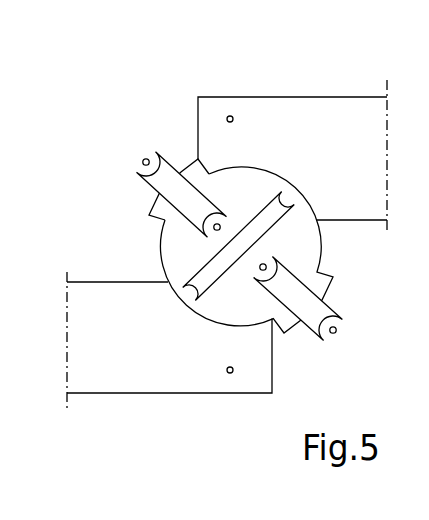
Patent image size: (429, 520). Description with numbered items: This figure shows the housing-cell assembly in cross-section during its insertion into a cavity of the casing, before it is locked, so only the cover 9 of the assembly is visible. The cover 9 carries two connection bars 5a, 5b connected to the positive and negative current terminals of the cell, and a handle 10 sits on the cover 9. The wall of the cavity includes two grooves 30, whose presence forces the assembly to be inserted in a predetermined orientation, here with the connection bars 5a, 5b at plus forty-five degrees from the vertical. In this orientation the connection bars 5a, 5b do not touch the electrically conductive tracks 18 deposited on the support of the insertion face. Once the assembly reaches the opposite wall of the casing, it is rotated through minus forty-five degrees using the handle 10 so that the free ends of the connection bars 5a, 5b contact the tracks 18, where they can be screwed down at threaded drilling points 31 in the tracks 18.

The connection bar 5a is at (157, 150).
The connection bar 5b is at (336, 304).
The cover 9 is at (159, 263).
The handle 10 is at (200, 284).
The electrically conductive tracks 18 is at (313, 127).
The groove 30 is at (152, 197).
The threaded drilling point 31 is at (230, 113).